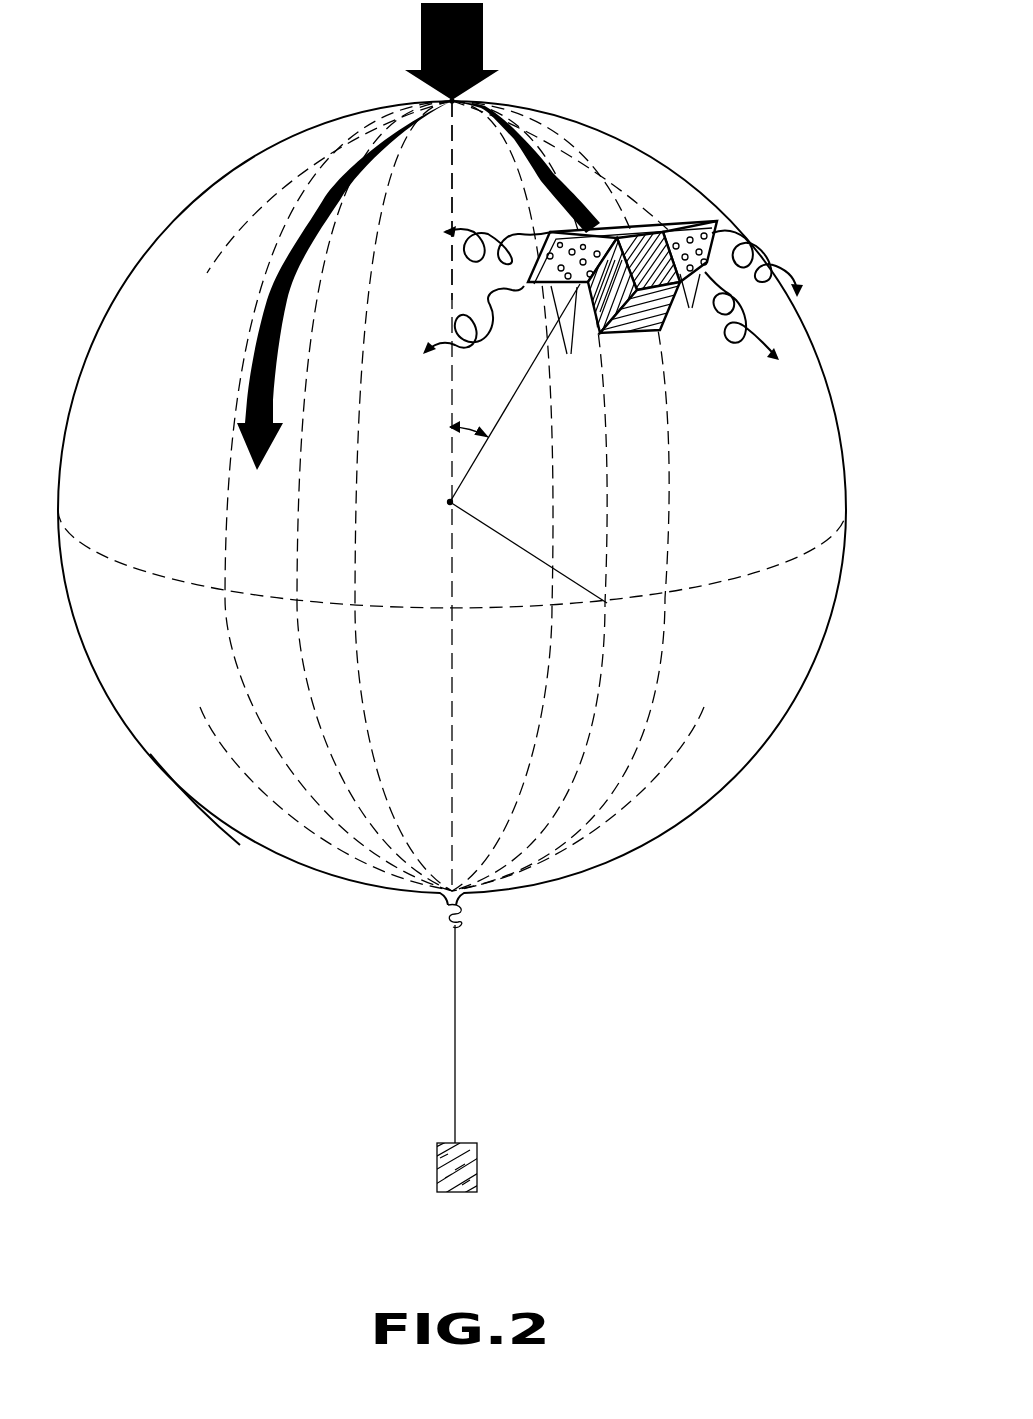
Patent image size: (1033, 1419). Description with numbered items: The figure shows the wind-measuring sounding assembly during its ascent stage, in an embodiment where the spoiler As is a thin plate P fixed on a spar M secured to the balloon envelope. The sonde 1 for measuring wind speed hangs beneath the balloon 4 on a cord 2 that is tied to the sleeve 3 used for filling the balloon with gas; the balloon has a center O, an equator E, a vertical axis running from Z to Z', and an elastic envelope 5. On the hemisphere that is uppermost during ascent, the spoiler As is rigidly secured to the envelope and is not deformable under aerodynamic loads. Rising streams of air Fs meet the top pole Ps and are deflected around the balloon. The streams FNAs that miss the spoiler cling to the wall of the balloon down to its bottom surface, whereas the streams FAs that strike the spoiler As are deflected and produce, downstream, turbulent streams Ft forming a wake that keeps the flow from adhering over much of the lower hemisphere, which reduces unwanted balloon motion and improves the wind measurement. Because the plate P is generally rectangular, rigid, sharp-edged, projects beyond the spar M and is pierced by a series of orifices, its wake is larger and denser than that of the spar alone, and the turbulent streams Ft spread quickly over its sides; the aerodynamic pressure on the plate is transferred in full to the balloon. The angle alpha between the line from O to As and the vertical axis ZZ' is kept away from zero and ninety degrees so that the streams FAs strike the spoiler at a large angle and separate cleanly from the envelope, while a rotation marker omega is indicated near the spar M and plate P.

The sonde 1 is at (432, 1168).
The cord 2 is at (458, 1045).
The sleeve 3 is at (447, 912).
The balloon 4 is at (452, 503).
The elastic envelope 5 is at (128, 732).
The top pole Ps is at (447, 99).
The streams of air Fs is at (483, 48).
The air streams encountering the spoiler FAs is at (568, 182).
The streams not encountering the spoiler FNAs is at (273, 287).
The spoiler As is at (675, 208).
The spar M is at (640, 317).
The plate P is at (663, 218).
The turbulent streams Ft is at (465, 243).
The center O is at (445, 498).
The equator E is at (795, 568).
The vertical axis Z is at (435, 496).
The vertical axis Z' is at (431, 200).
The angle alpha is at (471, 400).
The rotation rate omega is at (632, 336).